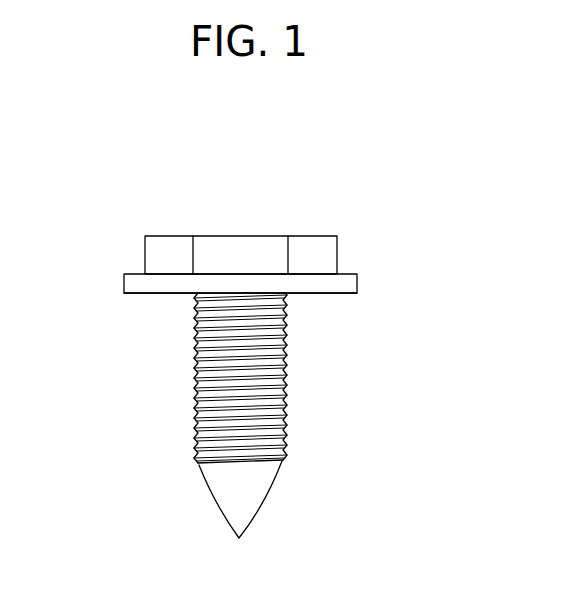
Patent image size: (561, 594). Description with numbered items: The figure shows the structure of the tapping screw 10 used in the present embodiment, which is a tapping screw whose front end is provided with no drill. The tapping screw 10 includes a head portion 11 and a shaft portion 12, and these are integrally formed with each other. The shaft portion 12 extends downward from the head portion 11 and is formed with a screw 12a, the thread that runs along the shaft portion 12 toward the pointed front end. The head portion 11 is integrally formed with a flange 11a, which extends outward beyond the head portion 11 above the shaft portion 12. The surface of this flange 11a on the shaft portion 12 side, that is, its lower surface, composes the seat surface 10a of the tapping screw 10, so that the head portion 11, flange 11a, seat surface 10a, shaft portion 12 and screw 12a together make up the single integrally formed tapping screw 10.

The tapping screw 10 is at (258, 338).
The seat surface 10a is at (327, 293).
The head portion 11 is at (240, 236).
The flange 11a is at (135, 286).
The shaft portion 12 is at (237, 415).
The screw 12a is at (197, 404).